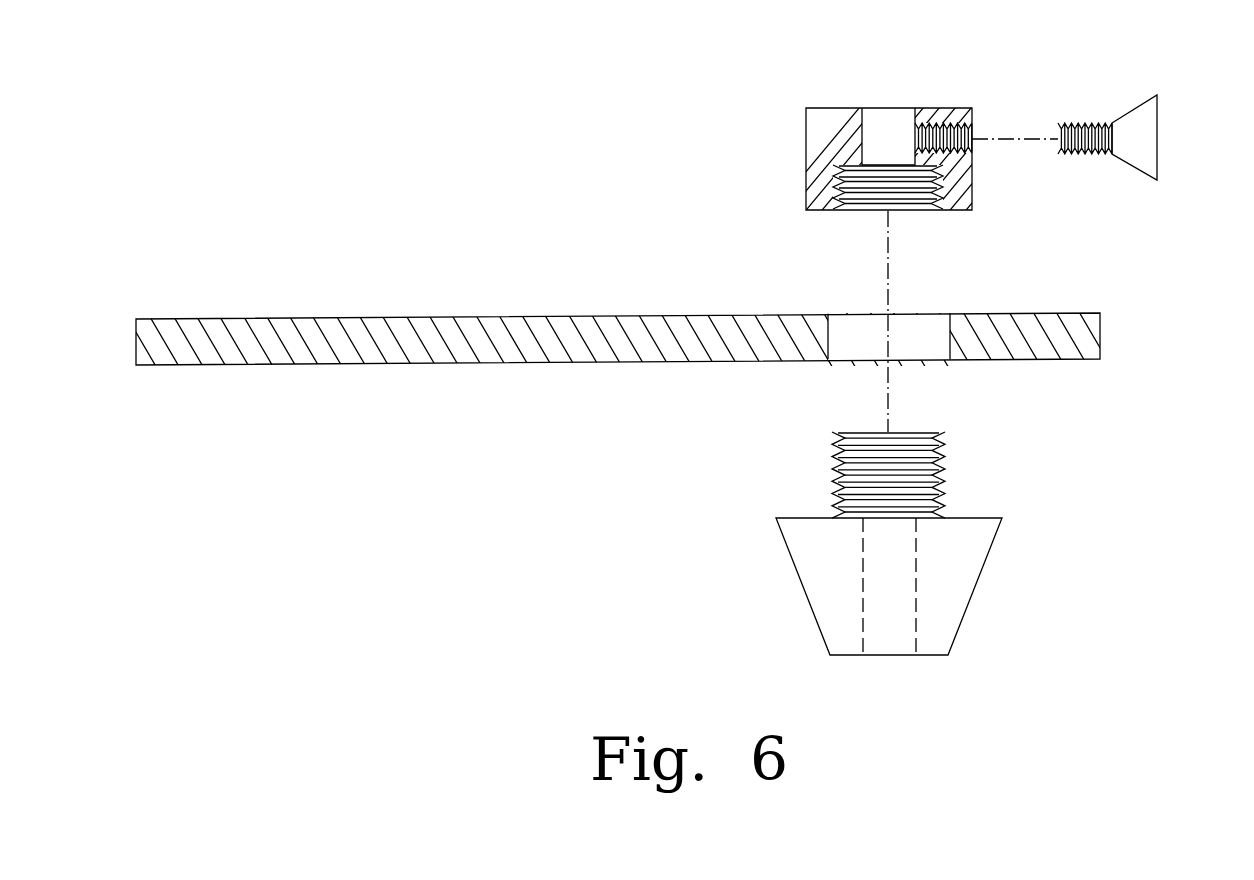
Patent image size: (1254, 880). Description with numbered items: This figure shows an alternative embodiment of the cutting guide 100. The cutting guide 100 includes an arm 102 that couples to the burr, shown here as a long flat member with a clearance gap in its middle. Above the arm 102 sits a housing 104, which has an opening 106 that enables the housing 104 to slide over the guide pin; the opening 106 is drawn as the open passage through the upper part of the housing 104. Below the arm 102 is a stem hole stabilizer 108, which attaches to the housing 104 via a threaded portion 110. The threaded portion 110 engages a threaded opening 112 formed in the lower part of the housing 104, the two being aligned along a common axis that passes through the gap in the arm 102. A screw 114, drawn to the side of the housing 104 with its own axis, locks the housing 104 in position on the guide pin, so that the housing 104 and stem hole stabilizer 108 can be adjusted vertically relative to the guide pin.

The cutting guide 100 is at (688, 183).
The arm 102 is at (1100, 323).
The housing 104 is at (957, 108).
The opening 106 is at (888, 106).
The stem hole stabilizer 108 is at (968, 597).
The threaded portion 110 is at (945, 465).
The threaded opening 112 is at (935, 182).
The screw 114 is at (1157, 140).